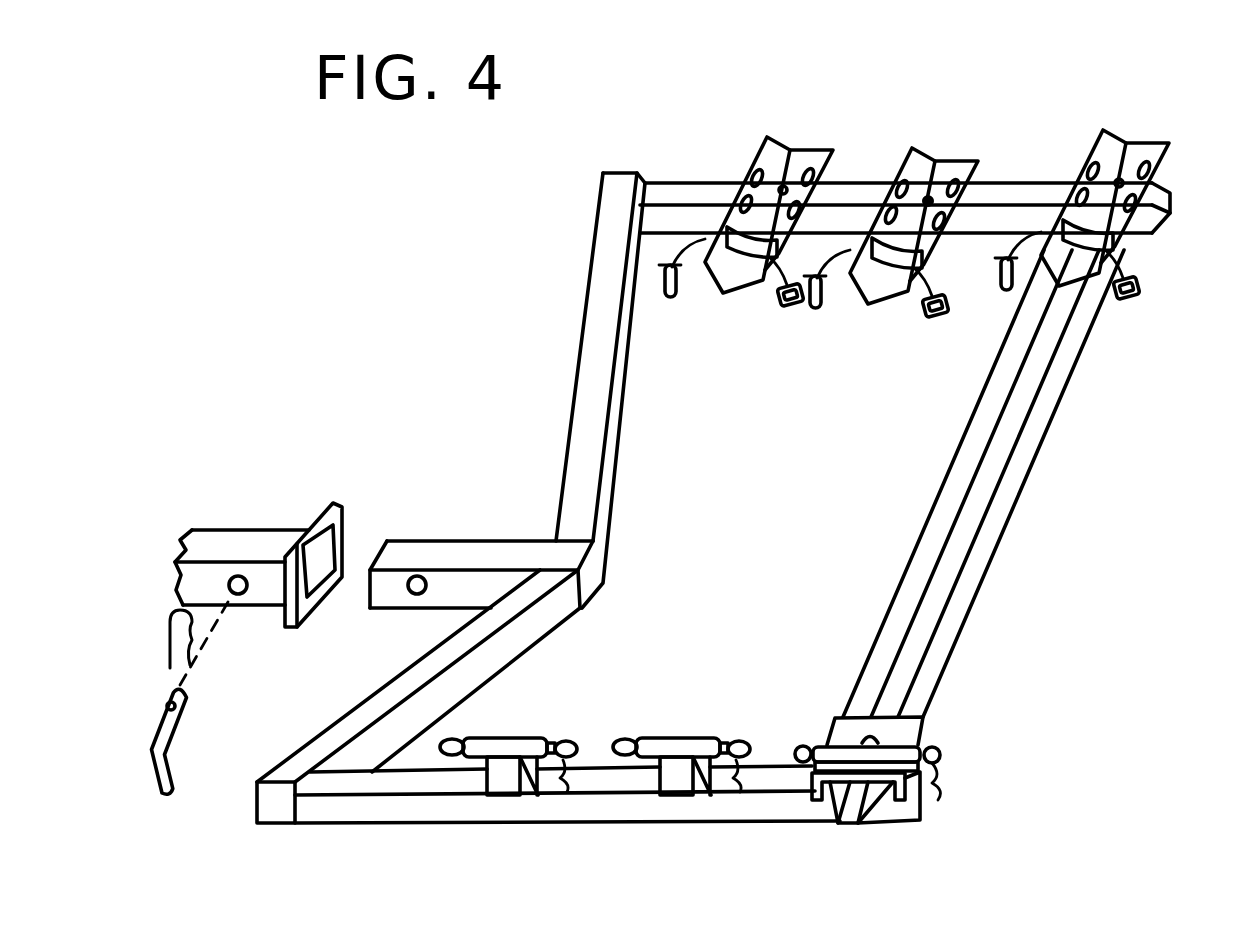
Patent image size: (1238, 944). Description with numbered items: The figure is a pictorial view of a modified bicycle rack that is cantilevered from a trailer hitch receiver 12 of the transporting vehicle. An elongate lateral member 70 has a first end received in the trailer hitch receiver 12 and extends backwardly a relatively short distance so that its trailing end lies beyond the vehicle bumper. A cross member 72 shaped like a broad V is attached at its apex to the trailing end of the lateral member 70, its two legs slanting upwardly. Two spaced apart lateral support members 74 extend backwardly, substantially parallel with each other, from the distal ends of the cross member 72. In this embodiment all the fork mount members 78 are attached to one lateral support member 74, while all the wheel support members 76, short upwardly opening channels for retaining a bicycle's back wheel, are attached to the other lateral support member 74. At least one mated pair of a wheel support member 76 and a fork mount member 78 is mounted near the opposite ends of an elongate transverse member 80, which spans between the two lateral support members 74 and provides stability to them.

The trailer hitch receiver 12 is at (312, 528).
The elongate lateral member 70 is at (483, 553).
The cross member 72 is at (598, 347).
The lateral support members 74 is at (690, 185).
The wheel support member 76 is at (772, 150).
The fork mount member 78 is at (505, 738).
The transverse member 80 is at (1062, 362).